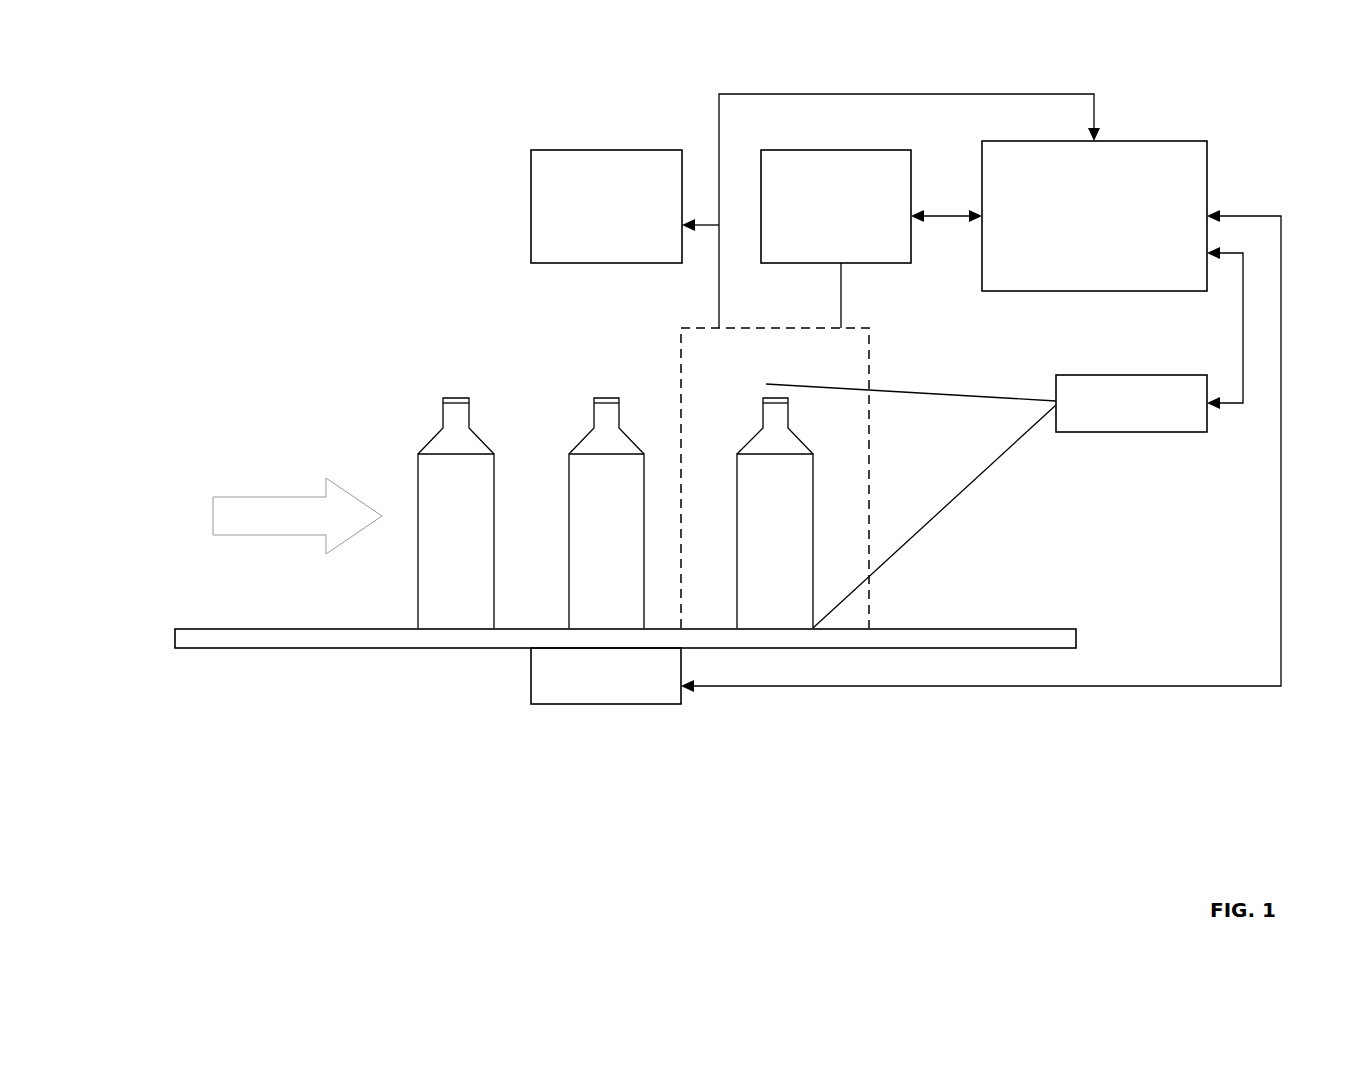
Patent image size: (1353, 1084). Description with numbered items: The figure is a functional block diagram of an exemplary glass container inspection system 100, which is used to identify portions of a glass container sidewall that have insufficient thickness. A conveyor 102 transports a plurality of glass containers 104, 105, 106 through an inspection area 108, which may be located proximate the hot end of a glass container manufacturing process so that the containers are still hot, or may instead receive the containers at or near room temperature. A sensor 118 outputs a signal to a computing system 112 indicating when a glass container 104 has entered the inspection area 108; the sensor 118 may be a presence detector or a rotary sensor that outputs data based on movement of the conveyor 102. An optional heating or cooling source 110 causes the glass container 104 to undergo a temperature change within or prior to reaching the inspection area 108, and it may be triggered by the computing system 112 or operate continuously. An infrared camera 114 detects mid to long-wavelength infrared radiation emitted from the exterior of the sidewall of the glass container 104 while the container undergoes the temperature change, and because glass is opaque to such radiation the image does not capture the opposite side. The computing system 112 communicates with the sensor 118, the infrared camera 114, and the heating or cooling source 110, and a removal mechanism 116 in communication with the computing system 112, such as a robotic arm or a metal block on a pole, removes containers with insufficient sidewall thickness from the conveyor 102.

The glass container inspection system 100 is at (182, 314).
The conveyor 102 is at (230, 628).
The glass container 104 is at (758, 585).
The glass container 105 is at (589, 585).
The glass container 106 is at (439, 585).
The inspection area 108 is at (680, 398).
The heating or cooling source 110 is at (867, 150).
The computing system 112 is at (1077, 285).
The infrared camera 114 is at (1102, 375).
The removal mechanism 116 is at (622, 150).
The sensor 118 is at (568, 705).